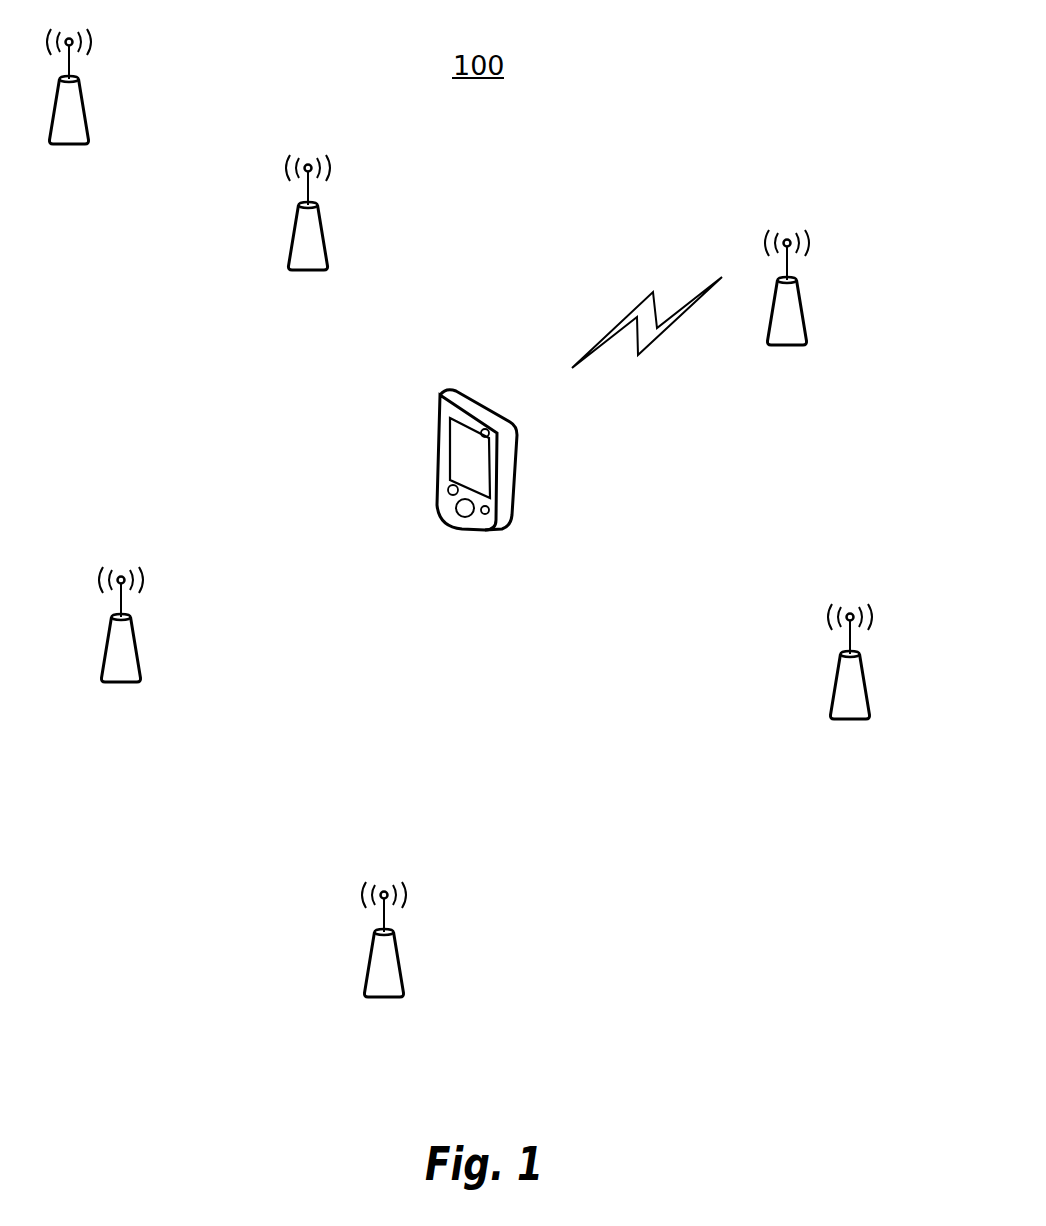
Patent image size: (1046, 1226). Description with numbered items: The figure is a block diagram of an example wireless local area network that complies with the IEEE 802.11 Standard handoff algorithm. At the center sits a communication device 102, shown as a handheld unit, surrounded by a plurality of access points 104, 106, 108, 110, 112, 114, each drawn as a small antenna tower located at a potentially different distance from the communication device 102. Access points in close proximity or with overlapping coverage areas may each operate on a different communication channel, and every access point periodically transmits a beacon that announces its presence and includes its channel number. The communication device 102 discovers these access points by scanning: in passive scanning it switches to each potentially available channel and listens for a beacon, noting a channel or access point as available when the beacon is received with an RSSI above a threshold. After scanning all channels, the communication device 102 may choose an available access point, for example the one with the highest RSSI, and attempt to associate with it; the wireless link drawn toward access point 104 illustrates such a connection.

The communication device 102 is at (477, 391).
The access point 104 is at (841, 266).
The access point 106 is at (353, 206).
The access point 108 is at (114, 80).
The access point 110 is at (166, 618).
The access point 112 is at (429, 933).
The access point 114 is at (895, 655).